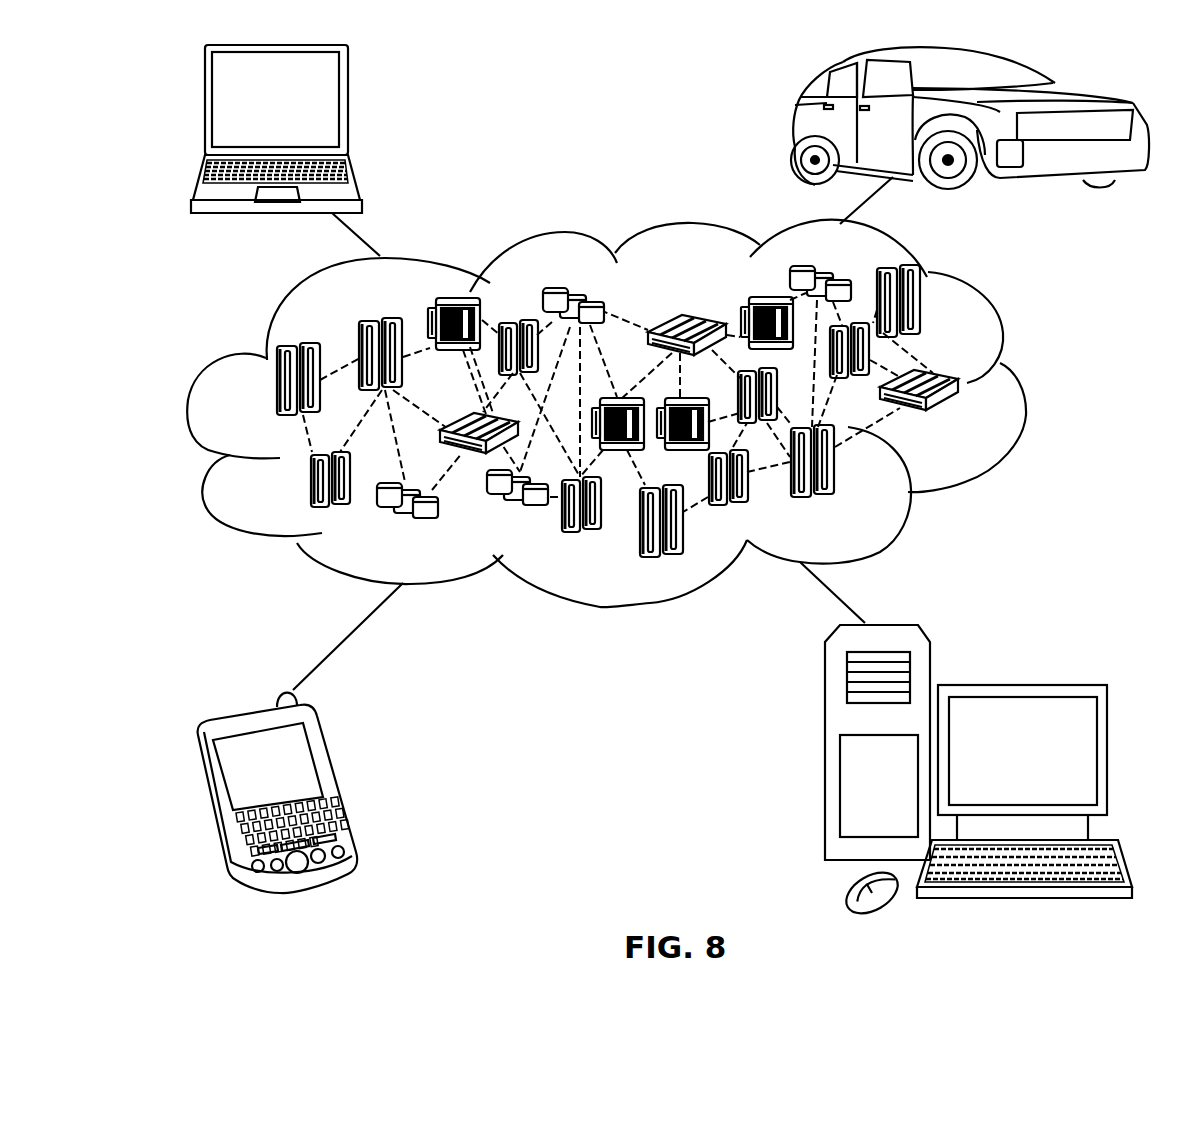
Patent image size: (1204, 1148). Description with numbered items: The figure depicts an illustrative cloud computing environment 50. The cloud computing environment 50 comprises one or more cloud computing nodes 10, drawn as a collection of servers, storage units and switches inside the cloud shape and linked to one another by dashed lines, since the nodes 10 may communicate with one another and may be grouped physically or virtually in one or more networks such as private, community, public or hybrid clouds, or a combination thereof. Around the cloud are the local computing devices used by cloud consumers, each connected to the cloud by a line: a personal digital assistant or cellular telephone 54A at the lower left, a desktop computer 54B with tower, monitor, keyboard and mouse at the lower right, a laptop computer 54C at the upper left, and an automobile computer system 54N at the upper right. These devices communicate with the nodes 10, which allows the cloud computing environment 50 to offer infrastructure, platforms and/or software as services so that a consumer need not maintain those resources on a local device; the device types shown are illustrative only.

The cloud computing environment 50 is at (1023, 385).
The cloud computing node 10 is at (957, 418).
The laptop computer 54C is at (348, 108).
The automobile computer system 54N is at (796, 125).
The personal digital assistant (PDA) or cellular telephone 54A is at (338, 778).
The desktop computer 54B is at (1020, 685).